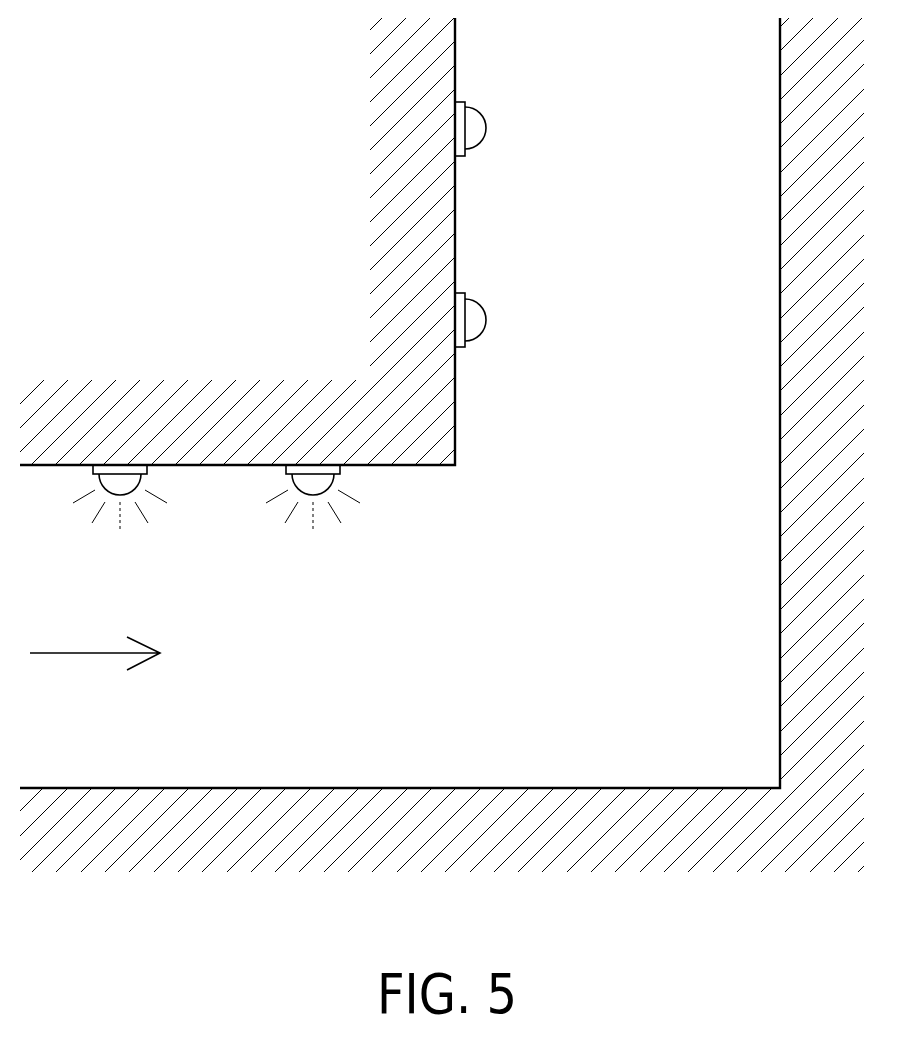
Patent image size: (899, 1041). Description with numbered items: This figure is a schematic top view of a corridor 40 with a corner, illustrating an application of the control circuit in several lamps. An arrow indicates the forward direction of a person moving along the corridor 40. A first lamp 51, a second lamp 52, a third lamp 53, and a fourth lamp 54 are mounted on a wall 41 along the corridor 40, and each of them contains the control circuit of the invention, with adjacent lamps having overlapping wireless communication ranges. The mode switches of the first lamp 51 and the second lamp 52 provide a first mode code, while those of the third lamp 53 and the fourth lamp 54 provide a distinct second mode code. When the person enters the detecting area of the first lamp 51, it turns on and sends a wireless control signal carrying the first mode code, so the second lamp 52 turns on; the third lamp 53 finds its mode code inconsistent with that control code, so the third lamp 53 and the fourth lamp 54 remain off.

The corridor 40 is at (351, 677).
The wall 41 is at (455, 237).
The first lamp 51 is at (127, 480).
The second lamp 52 is at (320, 480).
The third lamp 53 is at (473, 328).
The fourth lamp 54 is at (473, 137).